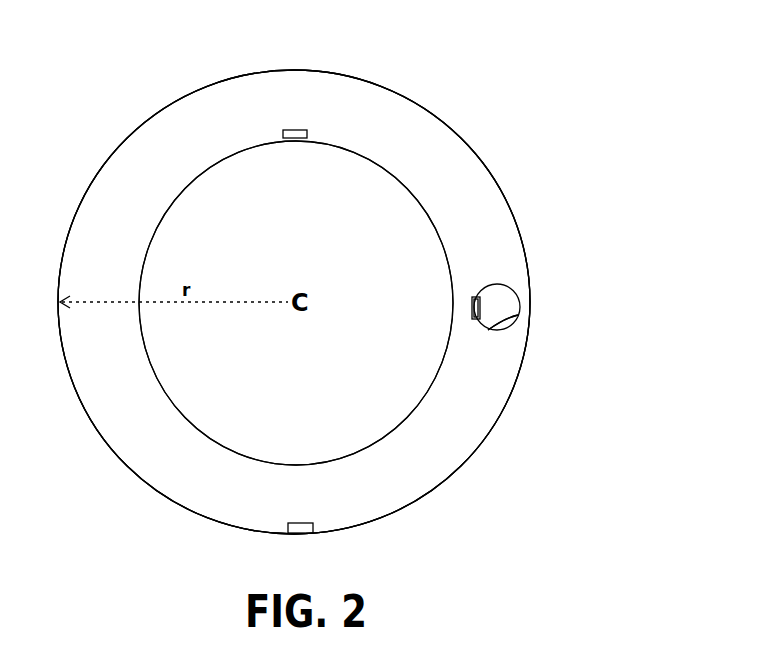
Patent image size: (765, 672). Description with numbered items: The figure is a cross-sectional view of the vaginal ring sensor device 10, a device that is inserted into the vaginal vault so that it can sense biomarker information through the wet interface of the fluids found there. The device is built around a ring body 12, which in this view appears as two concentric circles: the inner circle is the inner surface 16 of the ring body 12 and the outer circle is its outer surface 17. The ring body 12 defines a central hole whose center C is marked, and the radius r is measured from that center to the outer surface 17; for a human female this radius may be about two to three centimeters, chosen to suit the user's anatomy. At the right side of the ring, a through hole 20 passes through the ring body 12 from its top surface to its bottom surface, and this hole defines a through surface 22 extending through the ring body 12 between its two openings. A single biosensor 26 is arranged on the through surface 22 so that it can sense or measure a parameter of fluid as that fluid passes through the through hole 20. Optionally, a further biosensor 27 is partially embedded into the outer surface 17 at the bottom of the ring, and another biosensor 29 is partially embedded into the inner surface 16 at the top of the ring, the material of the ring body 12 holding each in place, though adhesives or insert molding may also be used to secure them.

The vaginal ring sensor device 10 is at (140, 86).
The ring body 12 is at (408, 115).
The inner surface 16 is at (390, 433).
The outer surface 17 is at (507, 403).
The through hole 20 is at (507, 297).
The through surface 22 is at (517, 317).
The biosensor 26 is at (472, 302).
The biosensor 27 is at (300, 529).
The biosensor 29 is at (293, 138).